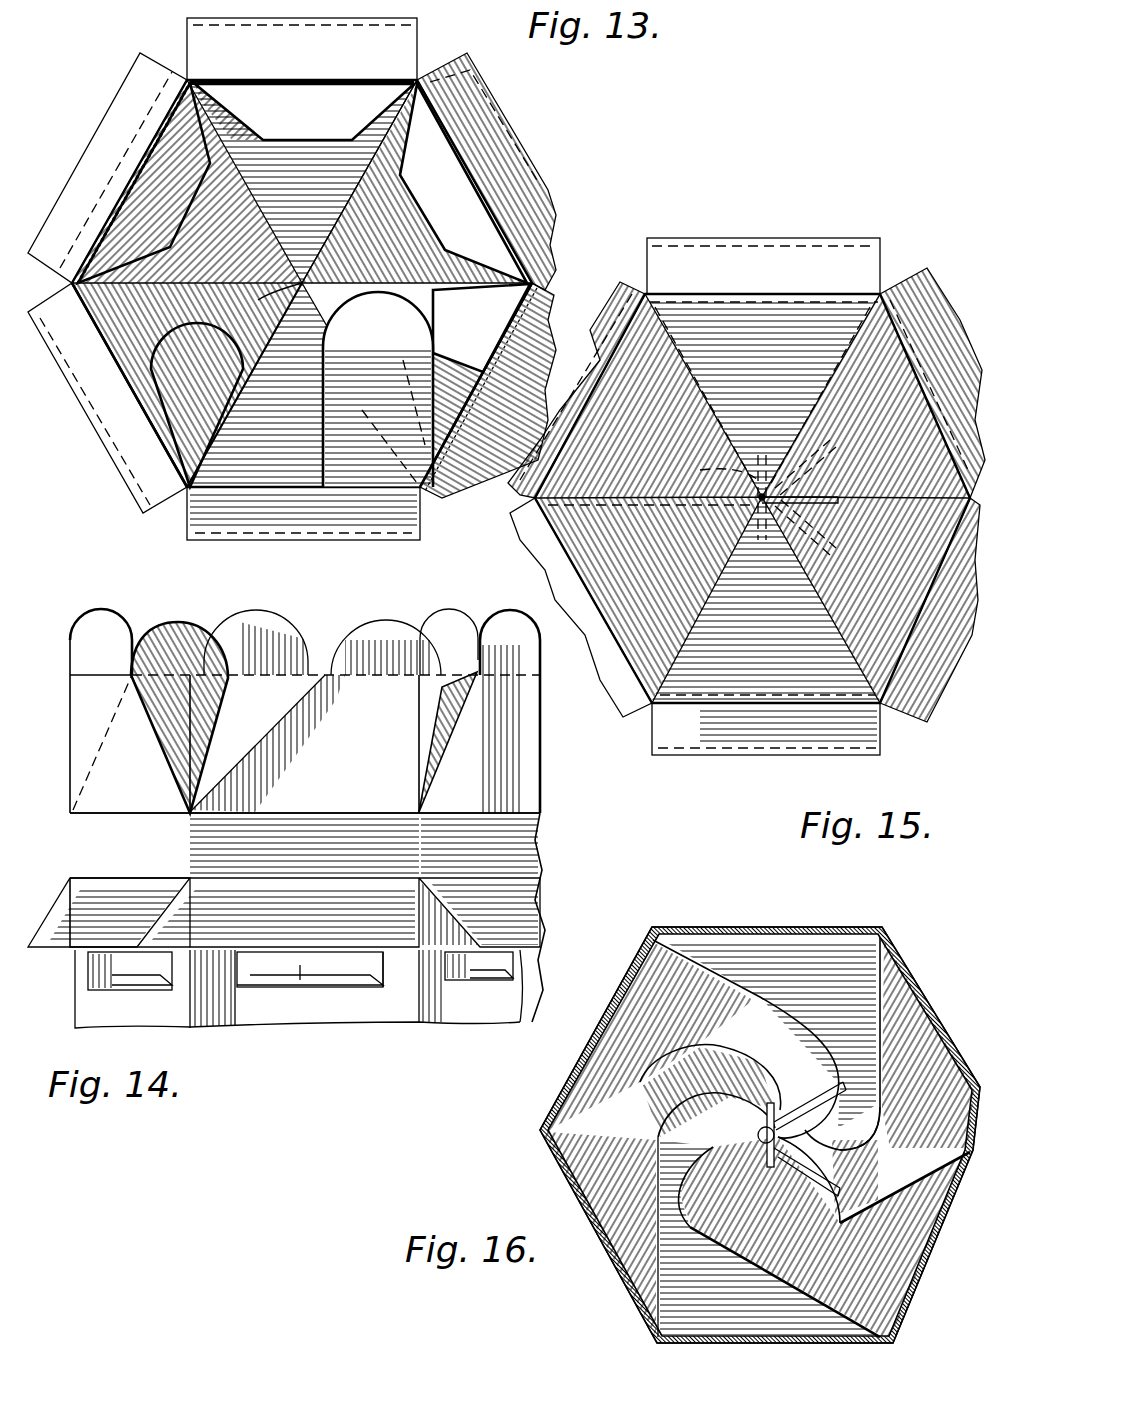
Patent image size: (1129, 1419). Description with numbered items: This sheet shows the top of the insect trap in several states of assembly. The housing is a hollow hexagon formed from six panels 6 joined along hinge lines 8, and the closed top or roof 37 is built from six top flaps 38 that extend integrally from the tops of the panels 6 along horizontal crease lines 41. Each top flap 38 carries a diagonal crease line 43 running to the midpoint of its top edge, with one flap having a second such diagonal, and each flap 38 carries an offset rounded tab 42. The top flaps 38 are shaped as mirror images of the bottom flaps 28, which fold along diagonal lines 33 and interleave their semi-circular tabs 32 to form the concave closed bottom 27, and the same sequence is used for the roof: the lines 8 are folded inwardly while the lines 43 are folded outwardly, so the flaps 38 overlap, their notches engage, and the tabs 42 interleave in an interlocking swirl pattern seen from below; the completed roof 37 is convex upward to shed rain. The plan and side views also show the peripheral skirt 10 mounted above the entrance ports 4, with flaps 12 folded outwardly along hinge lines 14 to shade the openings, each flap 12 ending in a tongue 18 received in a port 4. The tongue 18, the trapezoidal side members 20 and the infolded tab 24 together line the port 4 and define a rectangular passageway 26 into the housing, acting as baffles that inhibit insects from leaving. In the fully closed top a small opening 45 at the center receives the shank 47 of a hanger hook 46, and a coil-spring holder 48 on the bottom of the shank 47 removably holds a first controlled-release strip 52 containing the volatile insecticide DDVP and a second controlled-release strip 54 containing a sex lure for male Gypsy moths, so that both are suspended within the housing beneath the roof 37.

In FIG. 14, the entrance port 4 is at (160, 972).
In FIG. 14, the panel 6 is at (90, 1025).
In FIG. 16, the panel 6 is at (880, 936).
In FIG. 13, the hinge line 8 is at (235, 415).
In FIG. 14, the hinge line 8 is at (205, 758).
In FIG. 16, the hinge line 8 is at (690, 940).
In FIG. 16, the peripheral skirt 10 is at (838, 906).
In FIG. 13, the flap 12 is at (122, 114).
In FIG. 15, the flap 12 is at (615, 303).
In FIG. 14, the flap 12 is at (111, 911).
In FIG. 13, the hinge line 14 is at (400, 26).
In FIG. 15, the hinge line 14 is at (840, 238).
In FIG. 13, the tongue 18 is at (288, 122).
In FIG. 14, the tongue 18 is at (60, 955).
In FIG. 14, the side member 20 is at (232, 975).
In FIG. 14, the tab 24 is at (290, 990).
In FIG. 14, the passageway 26 is at (300, 985).
In FIG. 13, the closed bottom 27 is at (406, 254).
In FIG. 13, the flap 28 is at (299, 181).
In FIG. 16, the semi-circular tab 32 is at (808, 1052).
In FIG. 13, the diagonal crease line 33 is at (258, 300).
In FIG. 16, the closed top 37 is at (771, 965).
In FIG. 13, the top flap 38 is at (383, 406).
In FIG. 15, the top flap 38 is at (804, 366).
In FIG. 14, the top flap 38 is at (150, 796).
In FIG. 16, the top flap 38 is at (739, 1011).
In FIG. 14, the horizontal crease line 41 is at (285, 812).
In FIG. 13, the offset top tab 42 is at (286, 80).
In FIG. 14, the offset top tab 42 is at (130, 620).
In FIG. 13, the diagonal crease line 43 is at (100, 383).
In FIG. 15, the diagonal crease line 43 is at (690, 368).
In FIG. 14, the diagonal crease line 43 is at (555, 735).
In FIG. 13, the opening 45 is at (368, 423).
In FIG. 15, the hanger hook 46 is at (820, 500).
In FIG. 16, the hanger hook 46 is at (938, 1092).
In FIG. 15, the shank 47 is at (755, 500).
In FIG. 15, the coil-spring holder 48 is at (729, 494).
In FIG. 16, the coil-spring holder 48 is at (742, 1195).
In FIG. 15, the first controlled-release strip 52 is at (865, 463).
In FIG. 16, the first controlled-release strip 52 is at (815, 1085).
In FIG. 15, the second controlled-release strip 54 is at (815, 548).
In FIG. 16, the second controlled-release strip 54 is at (838, 1227).